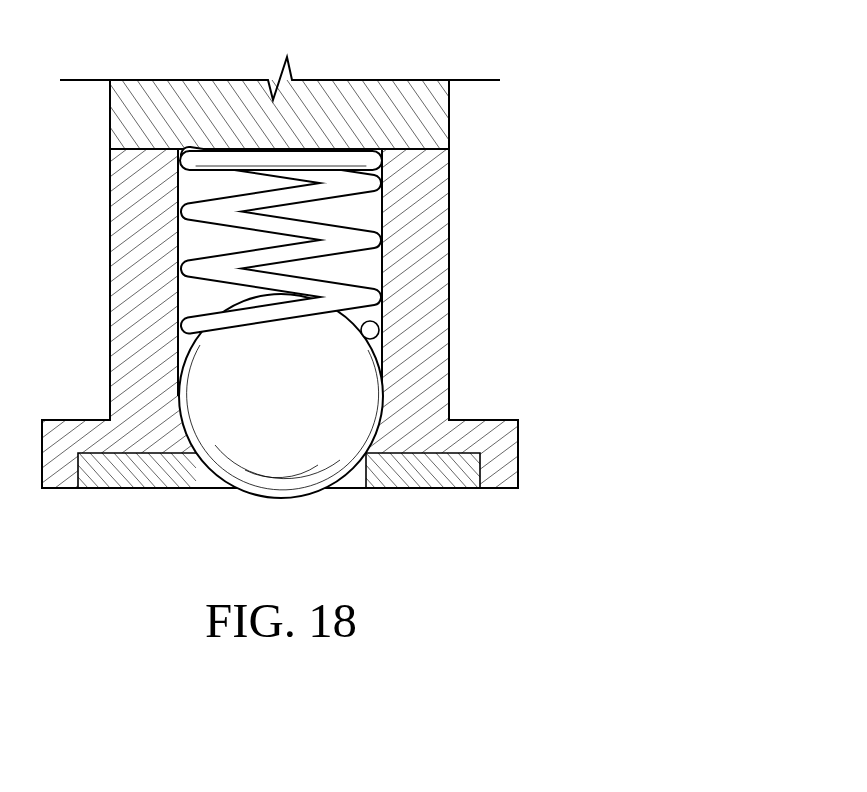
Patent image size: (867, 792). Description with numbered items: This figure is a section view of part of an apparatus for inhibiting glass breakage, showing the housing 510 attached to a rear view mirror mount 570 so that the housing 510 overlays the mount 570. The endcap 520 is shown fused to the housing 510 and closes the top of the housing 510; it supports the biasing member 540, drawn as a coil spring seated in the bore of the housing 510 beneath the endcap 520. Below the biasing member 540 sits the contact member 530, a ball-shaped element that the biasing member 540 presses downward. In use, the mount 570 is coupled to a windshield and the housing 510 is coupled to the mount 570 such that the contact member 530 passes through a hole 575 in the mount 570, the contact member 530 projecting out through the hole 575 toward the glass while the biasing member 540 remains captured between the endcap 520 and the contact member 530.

The housing 510 is at (483, 286).
The endcap 520 is at (411, 62).
The contact member 530 is at (328, 385).
The biasing member 540 is at (336, 232).
The rear view mirror mount 570 is at (130, 474).
The hole 575 is at (365, 472).